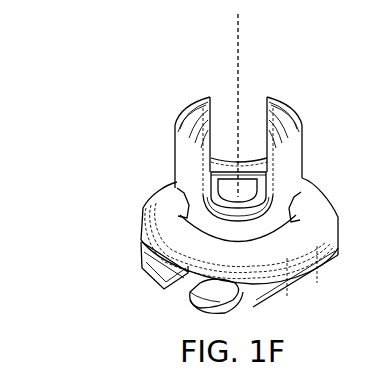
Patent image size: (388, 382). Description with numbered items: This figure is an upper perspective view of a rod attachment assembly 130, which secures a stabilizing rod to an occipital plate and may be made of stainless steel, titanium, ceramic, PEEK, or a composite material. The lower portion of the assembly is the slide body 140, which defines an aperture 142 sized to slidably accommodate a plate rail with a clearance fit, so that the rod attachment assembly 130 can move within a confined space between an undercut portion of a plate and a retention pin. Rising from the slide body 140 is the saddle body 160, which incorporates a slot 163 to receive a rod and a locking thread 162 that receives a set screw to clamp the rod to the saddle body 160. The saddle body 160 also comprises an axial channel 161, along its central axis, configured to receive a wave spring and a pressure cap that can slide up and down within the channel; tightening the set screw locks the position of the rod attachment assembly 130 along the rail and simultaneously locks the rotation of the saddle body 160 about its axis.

The rod attachment assembly 130 is at (133, 96).
The slide body 140 is at (299, 286).
The aperture 142 is at (148, 266).
The saddle body 160 is at (304, 151).
The axial channel 161 is at (242, 24).
The locking thread 162 is at (197, 118).
The slot 163 is at (268, 113).